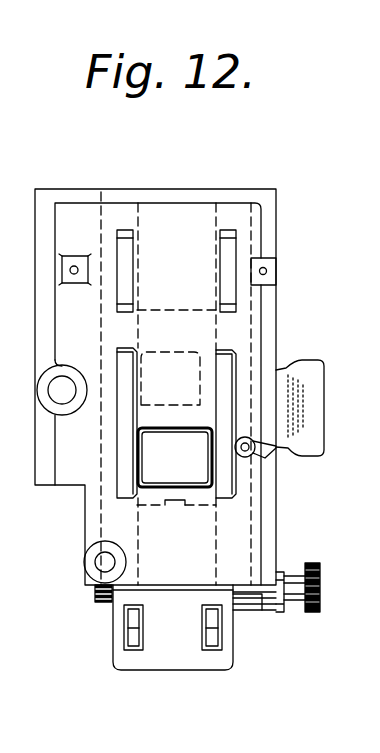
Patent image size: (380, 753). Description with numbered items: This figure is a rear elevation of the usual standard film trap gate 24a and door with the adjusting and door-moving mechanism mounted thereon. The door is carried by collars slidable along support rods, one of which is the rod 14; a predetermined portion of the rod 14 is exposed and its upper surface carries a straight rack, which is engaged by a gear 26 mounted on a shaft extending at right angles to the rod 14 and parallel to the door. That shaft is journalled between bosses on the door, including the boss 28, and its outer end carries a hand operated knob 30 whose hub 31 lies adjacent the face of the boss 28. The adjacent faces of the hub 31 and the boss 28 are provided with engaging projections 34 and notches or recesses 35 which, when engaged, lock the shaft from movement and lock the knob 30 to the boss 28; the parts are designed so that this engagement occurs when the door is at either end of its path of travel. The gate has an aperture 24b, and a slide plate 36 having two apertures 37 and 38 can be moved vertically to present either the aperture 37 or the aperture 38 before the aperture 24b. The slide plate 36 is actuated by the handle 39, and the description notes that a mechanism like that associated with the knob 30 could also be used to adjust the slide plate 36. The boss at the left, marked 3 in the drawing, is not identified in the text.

The pivot boss 3 is at (50, 390).
The rod 14 is at (100, 560).
The film trap gate 24a is at (232, 511).
The aperture 24b is at (216, 452).
The gear 26 is at (110, 602).
The boss 28 is at (243, 612).
The knob 30 is at (312, 570).
The hub 31 is at (280, 572).
The projections 34 is at (284, 606).
The notches 35 is at (258, 600).
The slide plate 36 is at (202, 330).
The aperture 37 is at (183, 428).
The aperture 38 is at (192, 363).
The handle 39 is at (305, 400).